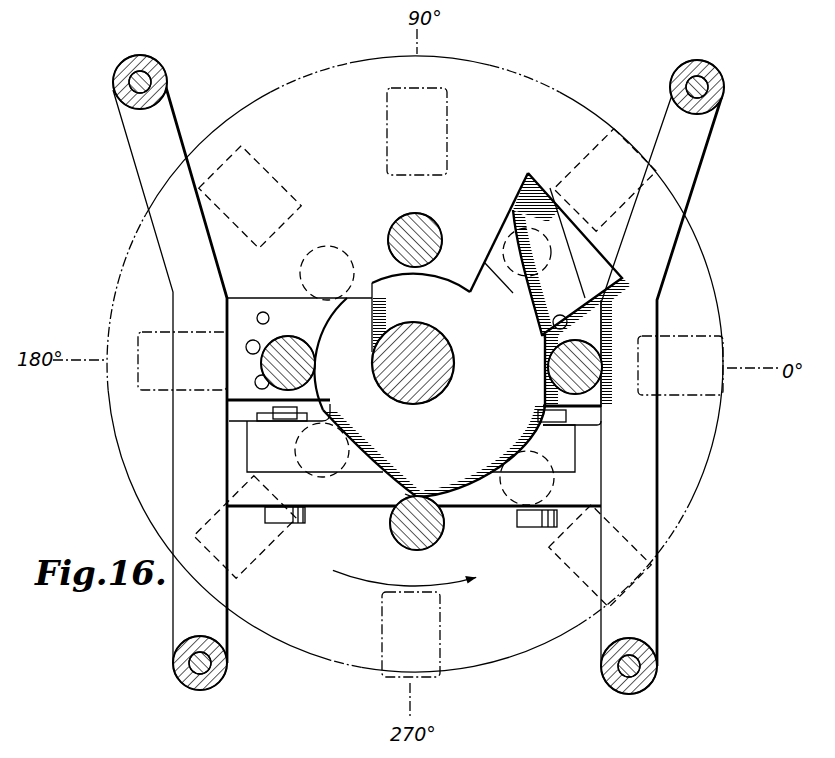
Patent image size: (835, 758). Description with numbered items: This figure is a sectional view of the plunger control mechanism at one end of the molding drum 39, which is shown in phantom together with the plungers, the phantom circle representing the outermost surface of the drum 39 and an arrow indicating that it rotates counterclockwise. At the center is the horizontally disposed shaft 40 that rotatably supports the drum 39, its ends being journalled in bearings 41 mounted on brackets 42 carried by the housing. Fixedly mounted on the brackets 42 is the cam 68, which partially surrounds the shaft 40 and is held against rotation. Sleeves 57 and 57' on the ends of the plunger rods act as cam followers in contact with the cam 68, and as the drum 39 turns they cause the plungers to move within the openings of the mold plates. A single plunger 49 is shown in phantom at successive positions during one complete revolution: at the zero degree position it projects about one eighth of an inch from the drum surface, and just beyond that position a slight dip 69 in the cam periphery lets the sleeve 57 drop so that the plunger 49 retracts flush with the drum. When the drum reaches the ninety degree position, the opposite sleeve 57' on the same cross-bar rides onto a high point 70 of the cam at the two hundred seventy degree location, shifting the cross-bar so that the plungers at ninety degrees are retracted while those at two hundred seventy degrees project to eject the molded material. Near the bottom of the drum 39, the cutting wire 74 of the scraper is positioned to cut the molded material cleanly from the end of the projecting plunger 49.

The molding drum 39 is at (273, 92).
The brackets 42 is at (145, 177).
The sleeves 57 is at (514, 304).
The sleeve 57' is at (356, 440).
The bearings 41 is at (378, 282).
The shaft 40 is at (424, 328).
The dip 69 is at (541, 337).
The plunger 49 is at (722, 391).
The high point 70 is at (417, 496).
The cam 68 is at (455, 480).
The cutting wire 74 is at (432, 675).